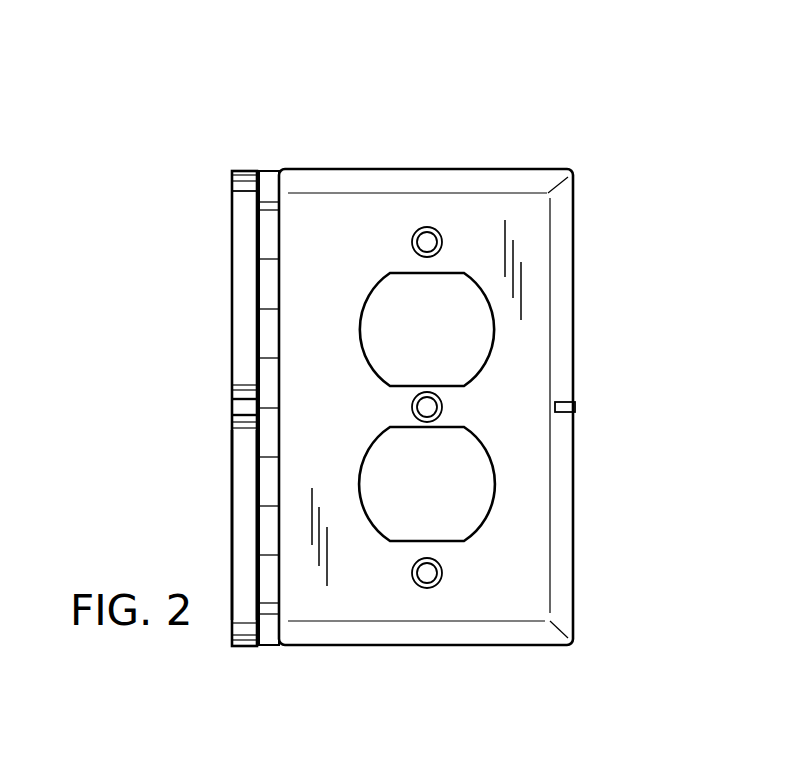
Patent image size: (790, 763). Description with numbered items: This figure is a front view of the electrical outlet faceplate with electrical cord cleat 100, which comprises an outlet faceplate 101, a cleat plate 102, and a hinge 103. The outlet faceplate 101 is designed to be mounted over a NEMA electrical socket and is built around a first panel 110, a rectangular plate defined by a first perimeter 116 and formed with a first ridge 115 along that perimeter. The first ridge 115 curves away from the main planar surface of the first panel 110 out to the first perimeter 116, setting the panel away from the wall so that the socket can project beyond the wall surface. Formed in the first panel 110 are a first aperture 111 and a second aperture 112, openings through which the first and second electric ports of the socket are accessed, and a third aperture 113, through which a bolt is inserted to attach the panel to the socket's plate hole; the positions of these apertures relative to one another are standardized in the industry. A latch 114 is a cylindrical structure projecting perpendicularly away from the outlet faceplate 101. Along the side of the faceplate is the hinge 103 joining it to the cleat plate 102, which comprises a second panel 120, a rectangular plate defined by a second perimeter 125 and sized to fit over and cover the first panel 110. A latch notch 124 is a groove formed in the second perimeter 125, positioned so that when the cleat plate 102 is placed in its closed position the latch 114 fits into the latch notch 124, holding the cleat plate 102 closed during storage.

The electrical outlet faceplate with electrical cord cleat 100 is at (120, 85).
The outlet faceplate 101 is at (335, 170).
The cleat plate 102 is at (232, 238).
The hinge 103 is at (267, 203).
The first panel 110 is at (540, 228).
The first aperture 111 is at (472, 310).
The second aperture 112 is at (478, 485).
The third aperture 113 is at (440, 407).
The latch 114 is at (575, 407).
The first ridge 115 is at (470, 183).
The first perimeter 116 is at (577, 186).
The second panel 120 is at (243, 527).
The latch notch 124 is at (237, 408).
The second perimeter 125 is at (232, 492).